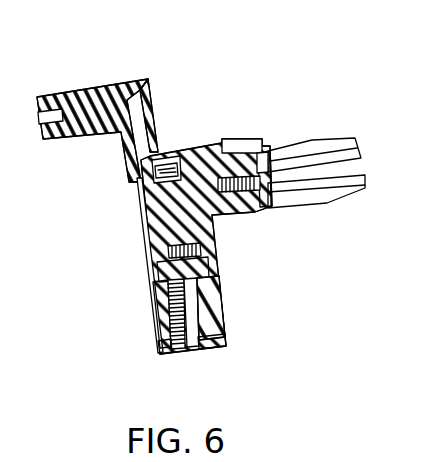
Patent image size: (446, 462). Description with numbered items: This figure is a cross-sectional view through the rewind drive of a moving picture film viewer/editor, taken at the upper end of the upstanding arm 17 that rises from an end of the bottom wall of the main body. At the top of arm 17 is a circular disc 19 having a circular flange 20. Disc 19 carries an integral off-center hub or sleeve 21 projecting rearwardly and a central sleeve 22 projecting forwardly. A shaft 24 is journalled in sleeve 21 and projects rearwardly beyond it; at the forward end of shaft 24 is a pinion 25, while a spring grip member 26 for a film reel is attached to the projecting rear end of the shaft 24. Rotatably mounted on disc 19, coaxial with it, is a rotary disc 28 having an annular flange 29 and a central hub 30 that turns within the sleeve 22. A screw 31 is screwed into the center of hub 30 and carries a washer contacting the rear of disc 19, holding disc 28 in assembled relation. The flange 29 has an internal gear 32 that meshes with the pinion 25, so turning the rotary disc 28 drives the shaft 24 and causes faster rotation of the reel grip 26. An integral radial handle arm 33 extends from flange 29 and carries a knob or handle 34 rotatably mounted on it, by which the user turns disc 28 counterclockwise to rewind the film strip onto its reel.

The upstanding arm 17 is at (228, 343).
The circular disc 19 is at (213, 301).
The circular flange 20 is at (176, 152).
The off-center hub or sleeve 21 is at (223, 140).
The central sleeve 22 is at (205, 272).
The shaft 24 is at (264, 146).
The pinion 25 is at (152, 214).
The spring grip member 26 is at (341, 114).
The rotary disc 28 is at (160, 298).
The annular flange 29 is at (182, 349).
The central hub 30 is at (160, 265).
The screw 31 is at (212, 246).
The internal gear 32 is at (163, 341).
The radial handle arm 33 is at (125, 148).
The knob or handle 34 is at (80, 90).